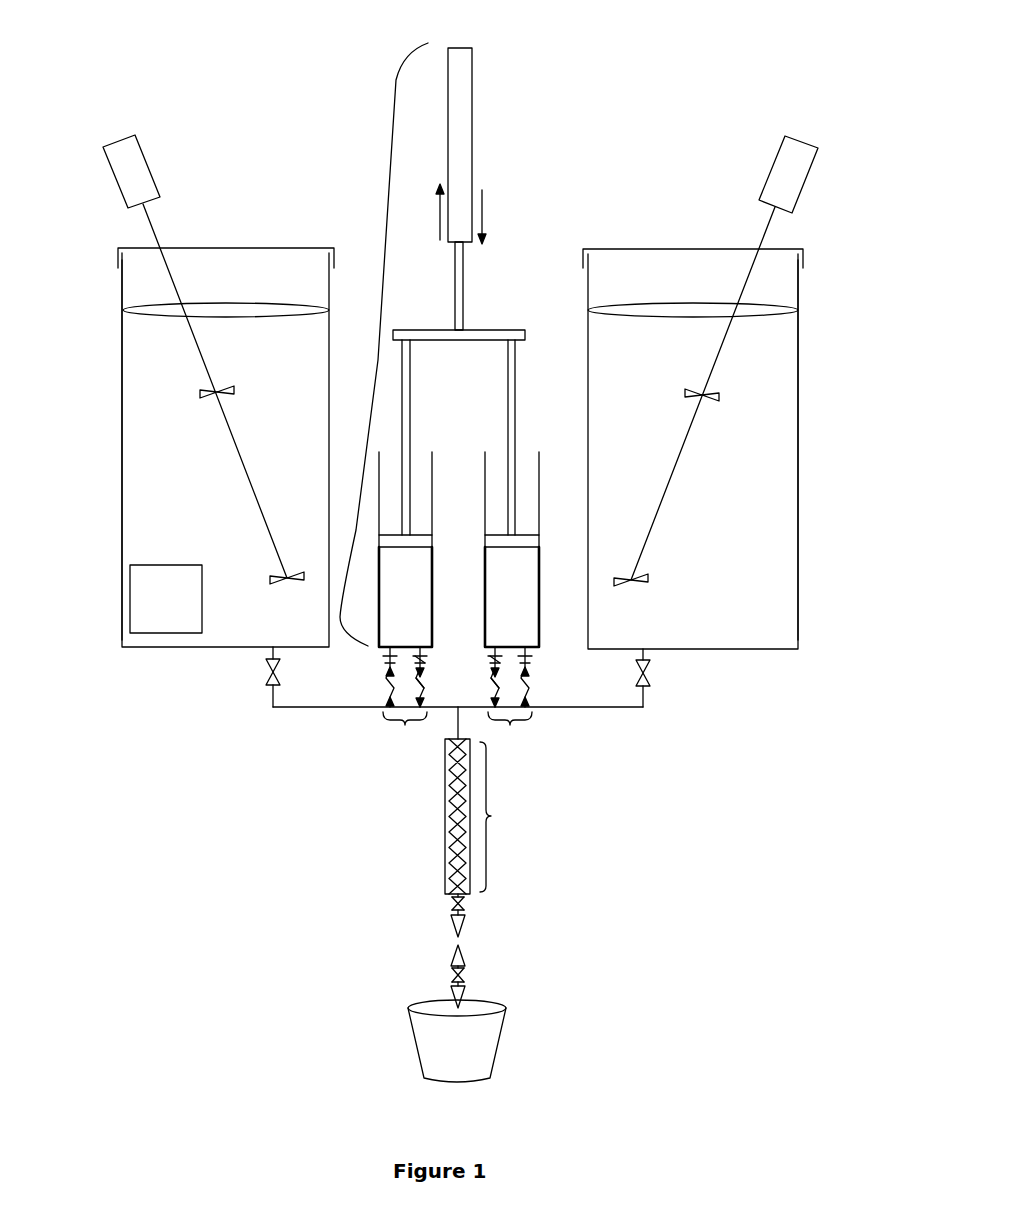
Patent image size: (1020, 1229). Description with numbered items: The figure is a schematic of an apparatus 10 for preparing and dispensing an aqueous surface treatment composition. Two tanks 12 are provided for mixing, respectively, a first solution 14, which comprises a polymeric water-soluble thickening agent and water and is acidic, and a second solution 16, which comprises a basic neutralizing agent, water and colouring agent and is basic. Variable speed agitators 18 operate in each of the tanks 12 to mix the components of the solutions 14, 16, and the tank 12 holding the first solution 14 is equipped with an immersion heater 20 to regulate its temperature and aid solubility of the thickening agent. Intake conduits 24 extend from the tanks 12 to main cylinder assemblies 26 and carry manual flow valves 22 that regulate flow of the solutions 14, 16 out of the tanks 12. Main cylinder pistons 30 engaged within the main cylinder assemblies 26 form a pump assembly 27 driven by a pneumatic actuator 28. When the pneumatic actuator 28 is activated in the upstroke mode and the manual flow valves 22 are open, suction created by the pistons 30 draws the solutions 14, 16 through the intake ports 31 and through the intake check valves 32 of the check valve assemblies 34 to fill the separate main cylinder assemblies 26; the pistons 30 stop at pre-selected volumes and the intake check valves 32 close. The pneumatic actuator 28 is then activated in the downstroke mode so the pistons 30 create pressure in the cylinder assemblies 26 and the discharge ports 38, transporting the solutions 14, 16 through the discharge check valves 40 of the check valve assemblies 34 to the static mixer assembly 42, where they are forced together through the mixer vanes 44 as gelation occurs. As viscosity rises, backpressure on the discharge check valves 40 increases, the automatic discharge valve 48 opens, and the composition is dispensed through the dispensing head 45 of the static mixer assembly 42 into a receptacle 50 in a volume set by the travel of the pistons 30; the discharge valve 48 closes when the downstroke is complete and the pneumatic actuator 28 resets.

The apparatus 10 is at (600, 60).
The tank 12 is at (122, 390).
The first solution 14 is at (122, 462).
The second solution 16 is at (798, 462).
The variable speed agitator 18 is at (157, 226).
The immersion heater 20 is at (140, 608).
The manual flow valve 22 is at (266, 670).
The intake conduit 24 is at (270, 708).
The main cylinder assembly 26 is at (379, 600).
The pump assembly 27 is at (376, 404).
The pneumatic actuator 28 is at (472, 170).
The main cylinder piston 30 is at (485, 535).
The intake port 31 is at (383, 660).
The intake check valve 32 is at (383, 688).
The check valve assembly 34 is at (457, 730).
The discharge port 38 is at (494, 662).
The discharge check valve 40 is at (490, 688).
The static mixer assembly 42 is at (485, 816).
The mixer vane 44 is at (463, 784).
The dispensing head 45 is at (464, 922).
The automatic discharge valve 48 is at (464, 960).
The receptacle 50 is at (487, 1046).